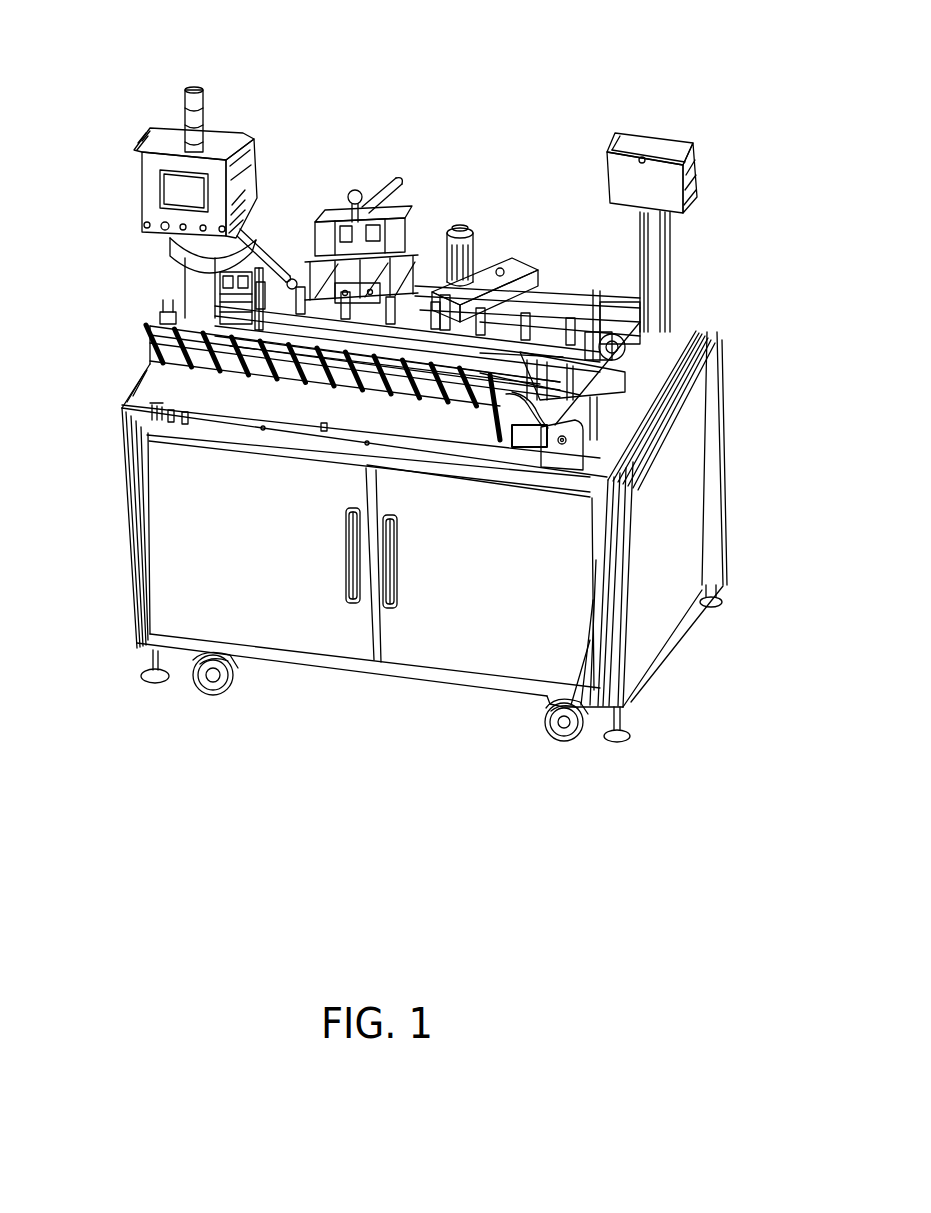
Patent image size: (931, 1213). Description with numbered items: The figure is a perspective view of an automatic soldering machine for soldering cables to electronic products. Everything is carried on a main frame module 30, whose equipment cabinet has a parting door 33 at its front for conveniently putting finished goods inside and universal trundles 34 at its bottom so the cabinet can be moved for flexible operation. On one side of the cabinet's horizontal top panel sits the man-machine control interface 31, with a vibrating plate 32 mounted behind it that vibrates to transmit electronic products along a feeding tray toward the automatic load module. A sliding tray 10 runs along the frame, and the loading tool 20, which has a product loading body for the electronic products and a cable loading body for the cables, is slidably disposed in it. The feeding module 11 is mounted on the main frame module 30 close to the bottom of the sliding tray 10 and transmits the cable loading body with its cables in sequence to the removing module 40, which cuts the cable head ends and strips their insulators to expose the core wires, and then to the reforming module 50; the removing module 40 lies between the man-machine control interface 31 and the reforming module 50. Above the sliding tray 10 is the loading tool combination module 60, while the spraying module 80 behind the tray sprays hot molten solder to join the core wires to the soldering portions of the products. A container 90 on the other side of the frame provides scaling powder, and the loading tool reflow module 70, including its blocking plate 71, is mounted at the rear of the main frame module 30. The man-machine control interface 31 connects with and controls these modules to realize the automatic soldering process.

The sliding tray 10 is at (163, 329).
The feeding module 11 is at (167, 322).
The loading tool 20 is at (503, 365).
The main frame module 30 is at (643, 432).
The man-machine control interface 31 is at (173, 138).
The vibrating plate 32 is at (260, 232).
The parting door 33 is at (213, 608).
The universal trundles 34 is at (578, 740).
The removing module 40 is at (220, 283).
The reforming module 50 is at (295, 233).
The loading tool combination module 60 is at (334, 215).
The loading tool reflow module 70 is at (637, 295).
The blocking plate 71 is at (163, 382).
The spraying module 80 is at (515, 262).
The container 90 is at (640, 147).